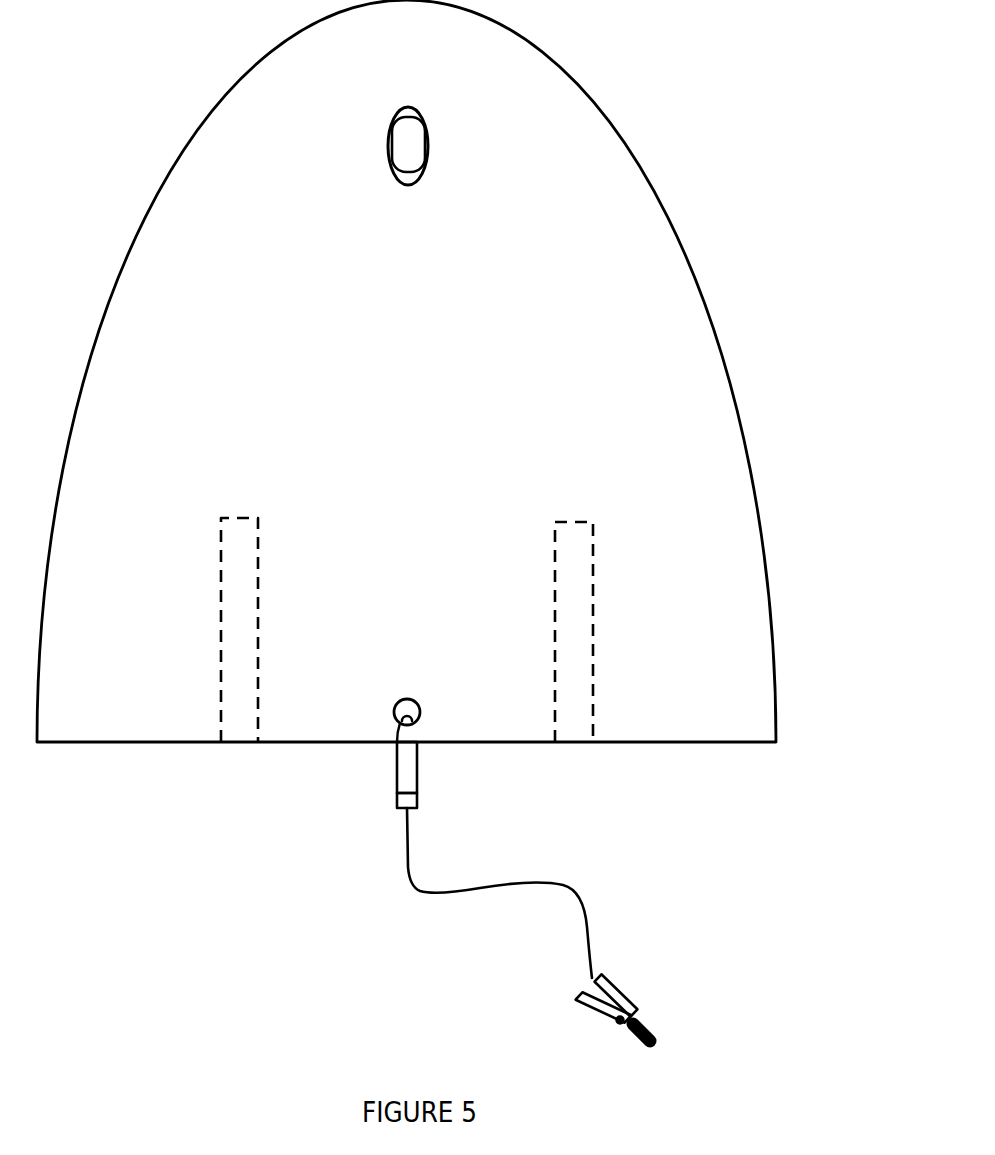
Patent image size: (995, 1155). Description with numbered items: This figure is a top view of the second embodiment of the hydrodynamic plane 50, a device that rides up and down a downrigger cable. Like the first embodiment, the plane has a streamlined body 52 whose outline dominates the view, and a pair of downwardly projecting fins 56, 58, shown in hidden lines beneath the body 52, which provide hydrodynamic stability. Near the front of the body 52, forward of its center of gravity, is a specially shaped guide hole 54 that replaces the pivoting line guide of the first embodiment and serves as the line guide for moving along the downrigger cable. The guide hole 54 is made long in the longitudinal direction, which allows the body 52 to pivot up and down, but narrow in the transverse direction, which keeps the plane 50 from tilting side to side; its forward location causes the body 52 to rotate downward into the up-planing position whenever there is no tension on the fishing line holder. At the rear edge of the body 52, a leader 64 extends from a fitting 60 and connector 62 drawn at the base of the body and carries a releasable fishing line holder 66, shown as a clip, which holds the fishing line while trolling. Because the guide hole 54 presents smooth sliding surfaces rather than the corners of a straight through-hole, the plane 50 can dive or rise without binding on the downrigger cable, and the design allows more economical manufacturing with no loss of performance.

The hydrodynamic plane 50 is at (687, 162).
The streamlined body 52 is at (540, 88).
The guide hole 54 is at (428, 150).
The fin 56 is at (258, 558).
The fin 58 is at (593, 570).
The snap connector 60 is at (417, 700).
The connector plug 62 is at (417, 780).
The leader 64 is at (415, 890).
The releasable fishing line holder 66 is at (630, 1015).